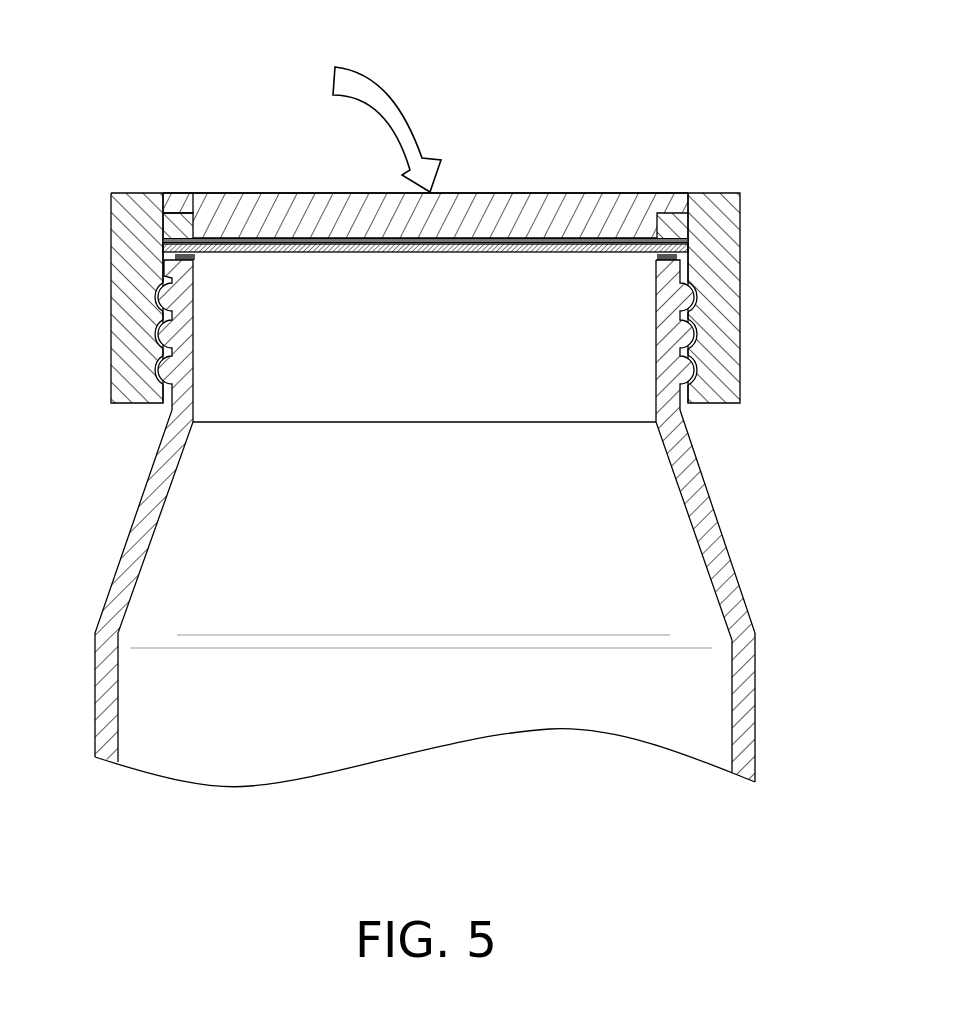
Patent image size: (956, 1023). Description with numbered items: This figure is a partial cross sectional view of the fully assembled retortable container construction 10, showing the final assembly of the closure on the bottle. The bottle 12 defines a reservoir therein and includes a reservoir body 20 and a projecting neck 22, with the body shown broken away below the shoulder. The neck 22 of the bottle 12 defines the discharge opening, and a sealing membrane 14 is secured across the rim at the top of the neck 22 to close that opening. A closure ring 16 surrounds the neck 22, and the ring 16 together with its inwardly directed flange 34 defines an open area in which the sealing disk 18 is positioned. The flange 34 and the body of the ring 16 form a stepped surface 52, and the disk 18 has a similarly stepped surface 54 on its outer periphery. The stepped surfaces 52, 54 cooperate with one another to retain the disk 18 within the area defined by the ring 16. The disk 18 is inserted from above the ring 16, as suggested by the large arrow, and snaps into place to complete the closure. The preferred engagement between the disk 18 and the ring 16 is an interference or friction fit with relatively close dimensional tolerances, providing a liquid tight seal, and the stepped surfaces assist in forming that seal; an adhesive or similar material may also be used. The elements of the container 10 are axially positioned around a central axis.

The retortable container construction 10 is at (106, 148).
The bottle 12 is at (475, 521).
The sealing membrane 14 is at (287, 246).
The closure ring 16 is at (434, 266).
The sealing disk 18 is at (425, 181).
The reservoir body 20 is at (757, 683).
The projecting neck 22 is at (670, 413).
The inwardly directed flange 34 is at (667, 227).
The stepped surface 52 is at (173, 225).
The stepped surface 54 is at (173, 206).